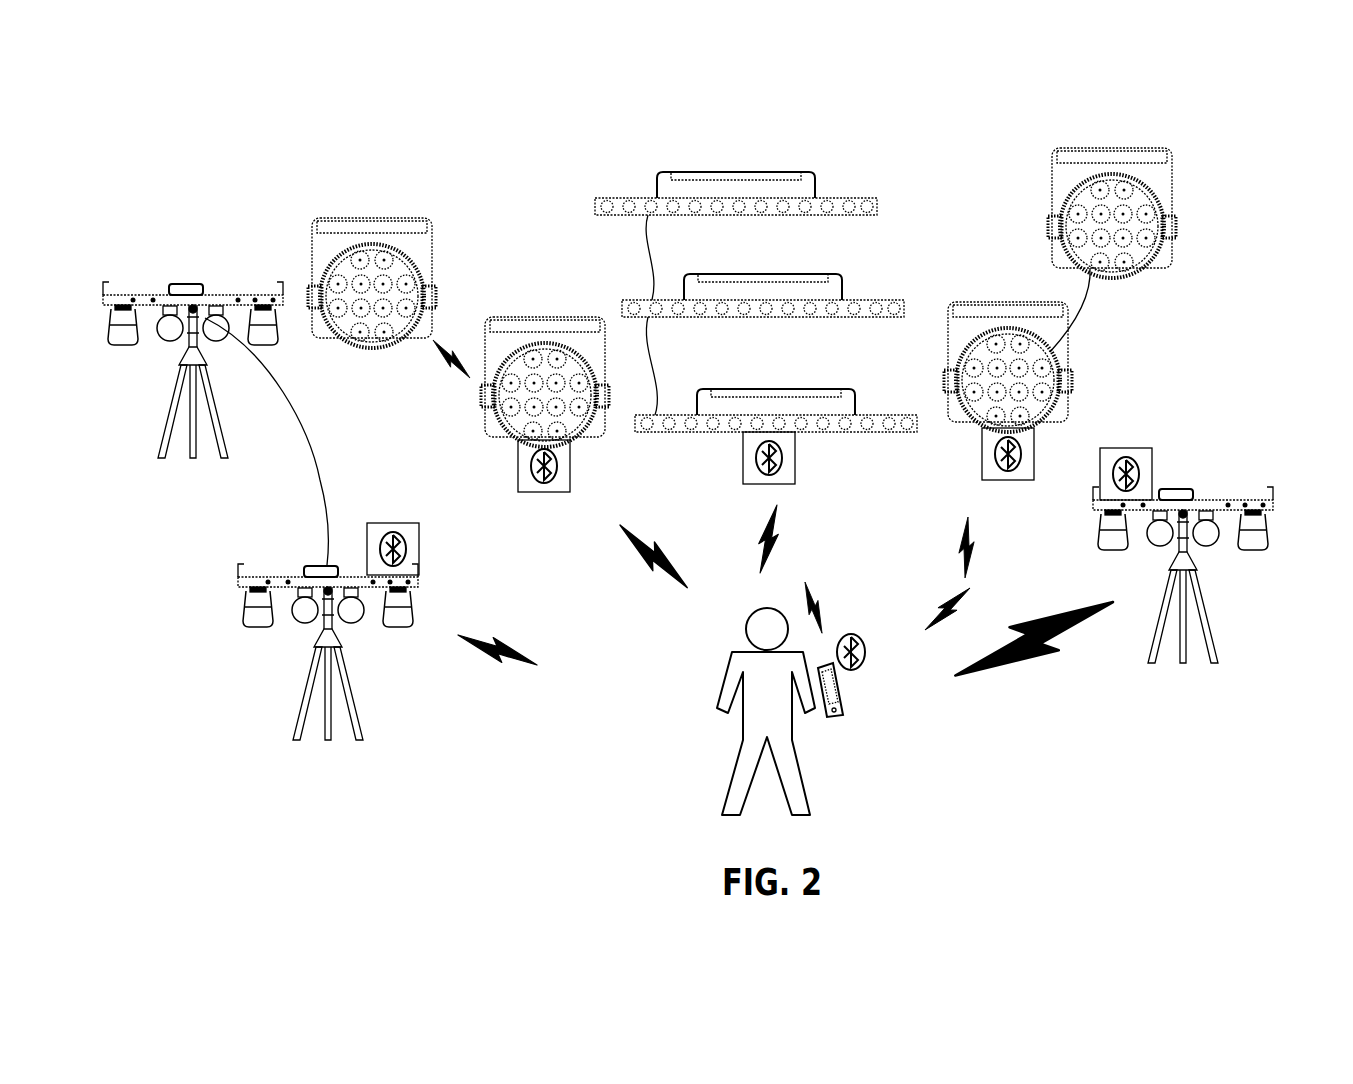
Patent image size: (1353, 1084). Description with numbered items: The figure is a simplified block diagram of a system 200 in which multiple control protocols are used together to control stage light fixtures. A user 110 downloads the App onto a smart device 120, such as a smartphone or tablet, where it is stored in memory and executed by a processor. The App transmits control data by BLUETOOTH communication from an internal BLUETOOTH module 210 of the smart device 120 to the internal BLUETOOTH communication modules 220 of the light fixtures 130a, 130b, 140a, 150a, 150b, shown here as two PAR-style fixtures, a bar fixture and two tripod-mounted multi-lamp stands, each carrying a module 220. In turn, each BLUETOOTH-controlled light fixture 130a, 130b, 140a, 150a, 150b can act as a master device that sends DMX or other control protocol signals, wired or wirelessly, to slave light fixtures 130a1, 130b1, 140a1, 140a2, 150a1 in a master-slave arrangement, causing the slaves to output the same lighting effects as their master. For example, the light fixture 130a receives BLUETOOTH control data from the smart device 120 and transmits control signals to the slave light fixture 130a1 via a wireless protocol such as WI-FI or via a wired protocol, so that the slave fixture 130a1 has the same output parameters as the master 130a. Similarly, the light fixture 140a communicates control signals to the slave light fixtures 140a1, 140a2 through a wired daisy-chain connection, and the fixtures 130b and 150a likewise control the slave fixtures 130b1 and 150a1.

The system 200 is at (1220, 150).
The user 110 is at (718, 679).
The smart device 120 is at (846, 717).
The internal BLUETOOTH module 210 is at (864, 660).
The internal BLUETOOTH communication module 220 is at (570, 466).
The light fixture 130a is at (503, 317).
The slave light fixture 130a1 is at (368, 218).
The light fixture 130b is at (988, 308).
The slave light fixture 130b1 is at (1100, 134).
The light fixture 140a is at (772, 388).
The slave light fixture 140a1 is at (748, 274).
The slave light fixture 140a2 is at (731, 172).
The light fixture 150a is at (289, 577).
The slave light fixture 150a1 is at (143, 295).
The light fixture 150b is at (1220, 500).